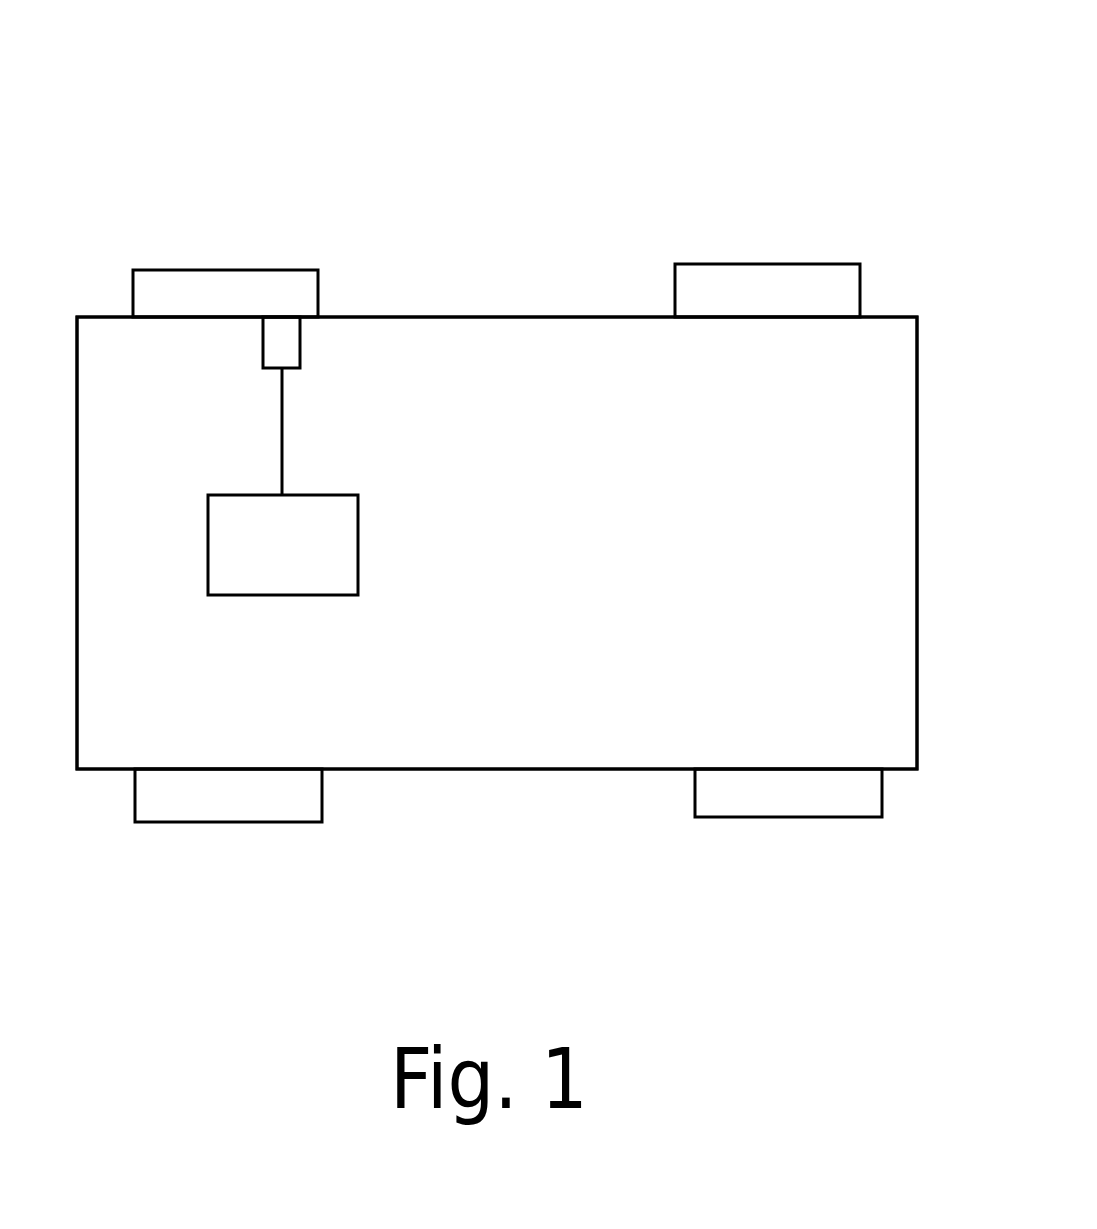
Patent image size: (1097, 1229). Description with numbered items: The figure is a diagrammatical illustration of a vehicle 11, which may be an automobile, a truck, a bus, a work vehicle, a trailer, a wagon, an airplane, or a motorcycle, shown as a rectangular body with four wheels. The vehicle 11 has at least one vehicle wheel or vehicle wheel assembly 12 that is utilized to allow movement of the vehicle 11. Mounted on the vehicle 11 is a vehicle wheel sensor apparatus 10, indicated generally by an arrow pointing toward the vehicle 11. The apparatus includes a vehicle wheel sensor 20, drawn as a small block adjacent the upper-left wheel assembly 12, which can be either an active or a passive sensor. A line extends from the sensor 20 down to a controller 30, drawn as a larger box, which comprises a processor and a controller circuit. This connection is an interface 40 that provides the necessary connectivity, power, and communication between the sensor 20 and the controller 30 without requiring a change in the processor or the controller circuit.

The vehicle wheel sensor apparatus 10 is at (537, 128).
The vehicle 11 is at (97, 749).
The vehicle wheel assembly 12 is at (189, 270).
The vehicle wheel sensor 20 is at (262, 345).
The controller 30 is at (263, 573).
The interface 40 is at (358, 418).